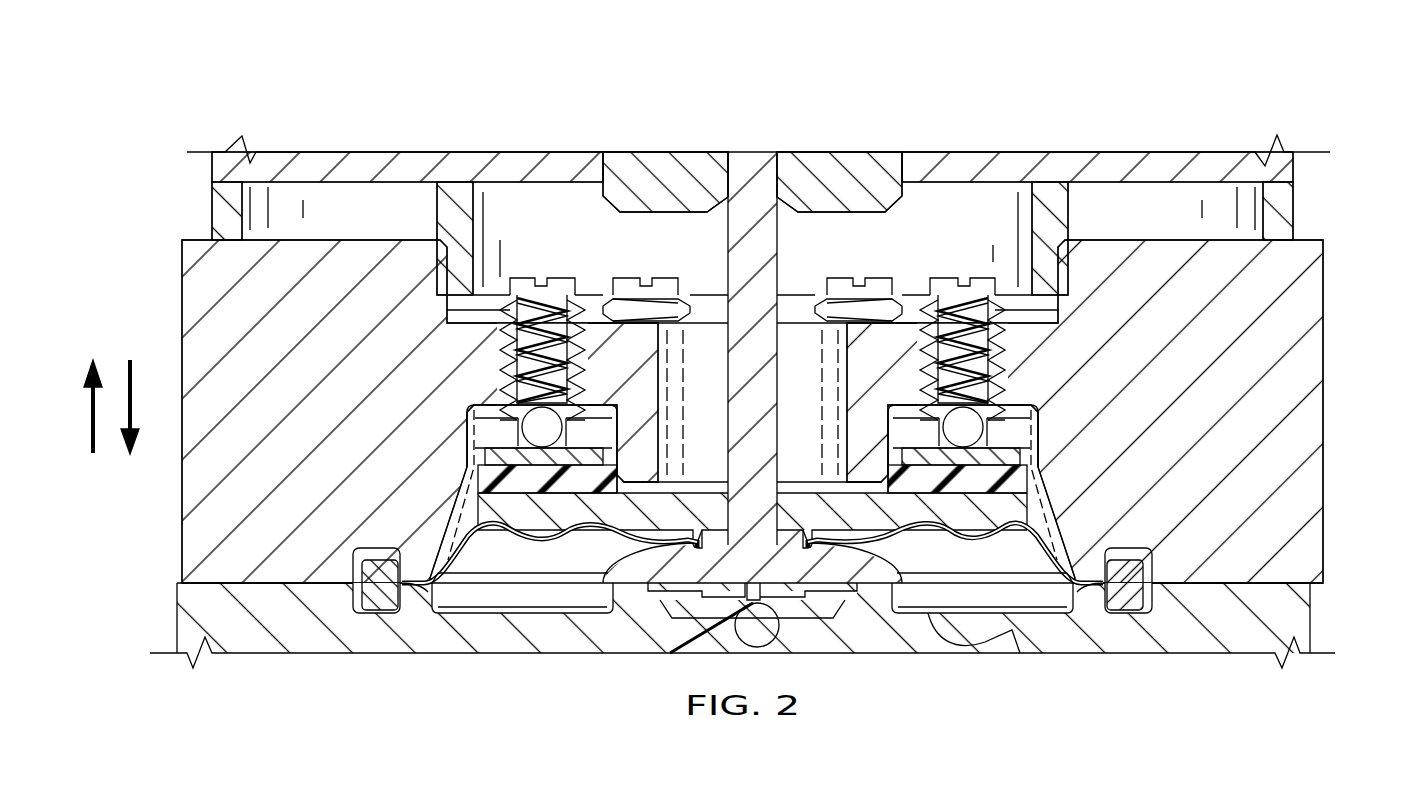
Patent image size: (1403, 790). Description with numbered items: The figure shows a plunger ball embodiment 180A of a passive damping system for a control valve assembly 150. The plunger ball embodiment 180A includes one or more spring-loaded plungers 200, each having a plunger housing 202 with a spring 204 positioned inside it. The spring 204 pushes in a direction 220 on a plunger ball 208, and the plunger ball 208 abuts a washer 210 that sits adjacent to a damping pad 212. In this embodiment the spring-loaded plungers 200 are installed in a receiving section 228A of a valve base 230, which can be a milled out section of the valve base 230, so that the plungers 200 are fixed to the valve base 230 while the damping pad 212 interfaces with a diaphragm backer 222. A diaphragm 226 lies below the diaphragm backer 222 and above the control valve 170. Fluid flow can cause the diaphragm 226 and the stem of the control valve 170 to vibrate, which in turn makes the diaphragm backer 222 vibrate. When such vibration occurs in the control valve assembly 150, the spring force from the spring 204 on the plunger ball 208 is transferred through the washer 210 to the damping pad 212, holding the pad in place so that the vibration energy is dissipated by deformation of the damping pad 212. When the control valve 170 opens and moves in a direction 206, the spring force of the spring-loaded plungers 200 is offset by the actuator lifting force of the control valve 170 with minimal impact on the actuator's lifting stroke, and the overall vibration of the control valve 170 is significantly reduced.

The control valve assembly 150 is at (1290, 224).
The control valve 170 is at (638, 565).
The plunger ball embodiment 180A is at (829, 116).
The spring-loaded plungers 200 is at (741, 326).
The plunger housing 202 is at (510, 346).
The spring 204 is at (543, 292).
The direction 206 is at (93, 432).
The plunger ball 208 is at (565, 426).
The washer 210 is at (484, 440).
The damping pad 212 is at (482, 478).
The direction 220 is at (130, 382).
The diaphragm backer 222 is at (480, 510).
The diaphragm 226 is at (470, 560).
The receiving section 228A is at (480, 416).
The valve base 230 is at (292, 444).